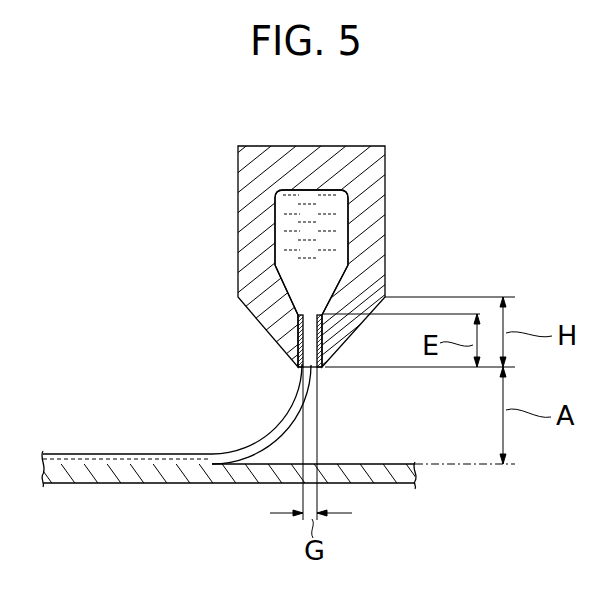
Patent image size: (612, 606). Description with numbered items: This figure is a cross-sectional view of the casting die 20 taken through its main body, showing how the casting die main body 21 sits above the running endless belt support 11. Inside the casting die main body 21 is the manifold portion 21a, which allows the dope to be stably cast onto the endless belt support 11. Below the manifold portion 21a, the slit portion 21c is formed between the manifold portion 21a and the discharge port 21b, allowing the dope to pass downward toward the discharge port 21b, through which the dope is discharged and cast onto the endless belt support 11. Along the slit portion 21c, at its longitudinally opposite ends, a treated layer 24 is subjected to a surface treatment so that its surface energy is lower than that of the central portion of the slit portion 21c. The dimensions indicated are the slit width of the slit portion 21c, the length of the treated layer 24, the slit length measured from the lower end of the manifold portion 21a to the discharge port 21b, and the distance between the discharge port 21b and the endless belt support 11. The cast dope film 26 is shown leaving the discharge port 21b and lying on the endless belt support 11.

The casting die 20 is at (193, 166).
The casting die main body 21 is at (388, 216).
The manifold portion 21a is at (275, 225).
The discharge port 21b is at (300, 368).
The slit portion 21c is at (284, 284).
The treated layer 24 is at (298, 340).
The fiber 26 is at (320, 400).
The endless belt support 11 is at (220, 484).